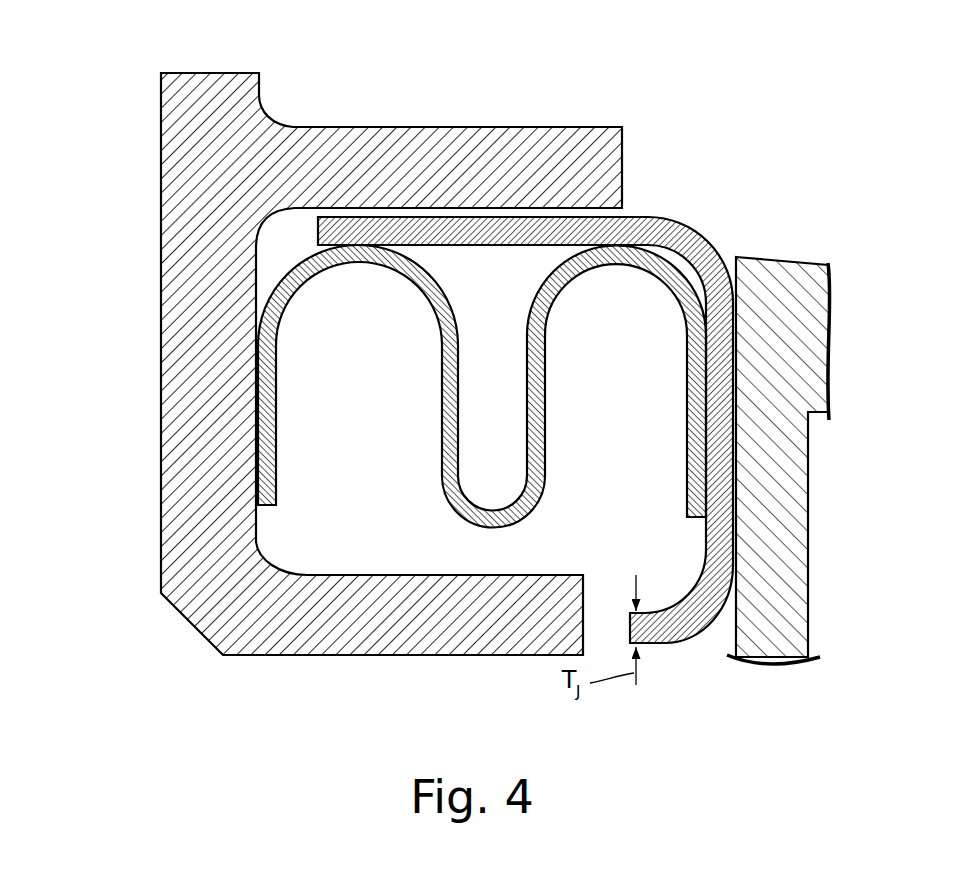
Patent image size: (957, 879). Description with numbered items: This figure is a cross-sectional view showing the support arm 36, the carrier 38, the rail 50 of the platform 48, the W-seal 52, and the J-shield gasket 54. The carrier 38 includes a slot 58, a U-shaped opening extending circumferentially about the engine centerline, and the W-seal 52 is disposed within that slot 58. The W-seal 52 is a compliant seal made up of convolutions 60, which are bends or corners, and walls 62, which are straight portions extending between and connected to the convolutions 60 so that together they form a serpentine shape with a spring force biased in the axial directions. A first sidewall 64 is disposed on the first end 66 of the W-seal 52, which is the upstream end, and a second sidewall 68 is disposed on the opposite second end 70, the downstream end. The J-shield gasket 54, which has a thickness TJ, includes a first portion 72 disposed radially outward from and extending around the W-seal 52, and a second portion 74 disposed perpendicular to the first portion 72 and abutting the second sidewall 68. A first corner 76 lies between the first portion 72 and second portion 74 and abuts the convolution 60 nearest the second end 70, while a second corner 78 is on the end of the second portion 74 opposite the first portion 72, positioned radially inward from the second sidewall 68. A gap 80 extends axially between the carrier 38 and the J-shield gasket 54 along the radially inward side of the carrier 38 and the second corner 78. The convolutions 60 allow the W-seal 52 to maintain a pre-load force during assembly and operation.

The support arm 36 is at (158, 107).
The carrier 38 is at (393, 126).
The platform 48 is at (811, 607).
The rail 50 is at (790, 259).
The W-seal 52 is at (277, 313).
The J-shield gasket 54 is at (640, 212).
The slot 58 is at (562, 208).
The convolutions 60 is at (370, 262).
The walls 62 is at (441, 385).
The first sidewall 64 is at (257, 425).
The first end 66 is at (266, 524).
The second sidewall 68 is at (686, 447).
The second end 70 is at (693, 521).
The first portion 72 is at (492, 229).
The second portion 74 is at (735, 354).
The first corner 76 is at (686, 223).
The second corner 78 is at (710, 613).
The gap 80 is at (627, 629).